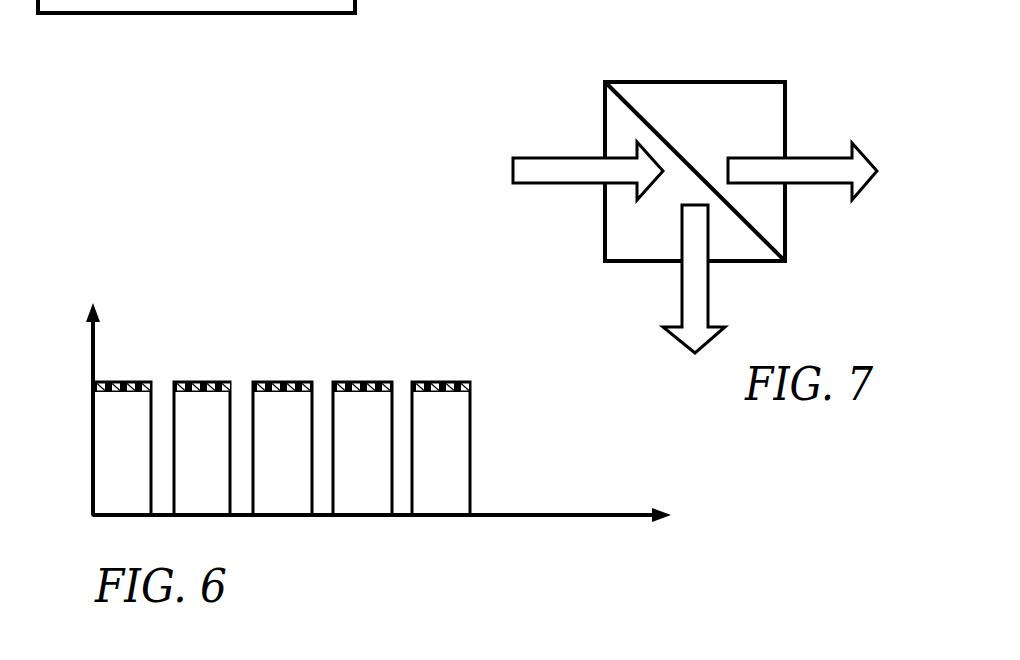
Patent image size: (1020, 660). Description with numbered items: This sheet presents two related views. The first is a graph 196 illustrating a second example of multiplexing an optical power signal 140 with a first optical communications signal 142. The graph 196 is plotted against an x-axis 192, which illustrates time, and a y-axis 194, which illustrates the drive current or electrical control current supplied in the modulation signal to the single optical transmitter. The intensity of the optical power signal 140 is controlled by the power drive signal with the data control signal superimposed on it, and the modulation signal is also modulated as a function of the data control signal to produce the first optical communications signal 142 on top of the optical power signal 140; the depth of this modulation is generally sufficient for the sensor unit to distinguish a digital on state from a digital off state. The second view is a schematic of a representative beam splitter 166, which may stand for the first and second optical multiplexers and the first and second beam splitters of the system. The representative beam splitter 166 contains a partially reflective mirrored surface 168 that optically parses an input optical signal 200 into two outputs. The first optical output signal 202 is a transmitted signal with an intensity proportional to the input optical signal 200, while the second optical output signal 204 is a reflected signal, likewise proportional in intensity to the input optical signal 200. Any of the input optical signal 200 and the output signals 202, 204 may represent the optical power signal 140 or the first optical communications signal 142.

In FIG. 6, the optical power signal 140 is at (470, 445).
In FIG. 6, the first optical communications signal 142 is at (470, 384).
In FIG. 7, the representative beam splitter 166 is at (695, 82).
In FIG. 7, the partially reflective mirrored surface 168 is at (668, 143).
In FIG. 6, the x-axis 192 is at (345, 558).
In FIG. 6, the y-axis 194 is at (65, 397).
In FIG. 6, the graph 196 is at (319, 394).
In FIG. 7, the input optical signal 200 is at (560, 156).
In FIG. 7, the first optical output signal 202 is at (814, 156).
In FIG. 7, the second optical output signal 204 is at (709, 285).